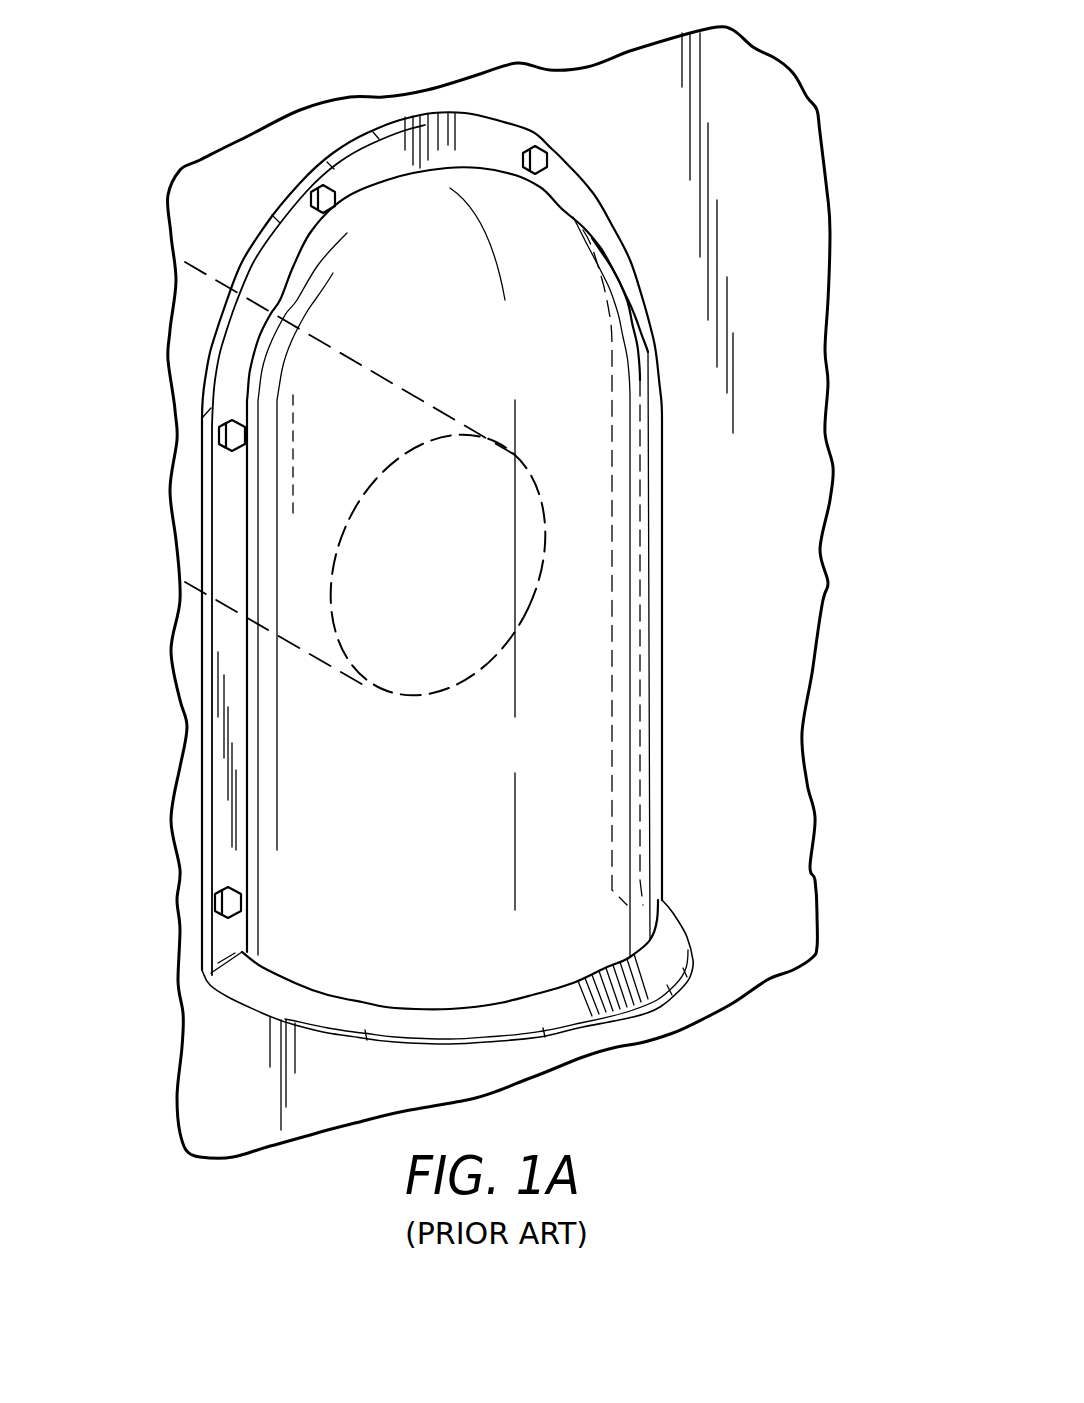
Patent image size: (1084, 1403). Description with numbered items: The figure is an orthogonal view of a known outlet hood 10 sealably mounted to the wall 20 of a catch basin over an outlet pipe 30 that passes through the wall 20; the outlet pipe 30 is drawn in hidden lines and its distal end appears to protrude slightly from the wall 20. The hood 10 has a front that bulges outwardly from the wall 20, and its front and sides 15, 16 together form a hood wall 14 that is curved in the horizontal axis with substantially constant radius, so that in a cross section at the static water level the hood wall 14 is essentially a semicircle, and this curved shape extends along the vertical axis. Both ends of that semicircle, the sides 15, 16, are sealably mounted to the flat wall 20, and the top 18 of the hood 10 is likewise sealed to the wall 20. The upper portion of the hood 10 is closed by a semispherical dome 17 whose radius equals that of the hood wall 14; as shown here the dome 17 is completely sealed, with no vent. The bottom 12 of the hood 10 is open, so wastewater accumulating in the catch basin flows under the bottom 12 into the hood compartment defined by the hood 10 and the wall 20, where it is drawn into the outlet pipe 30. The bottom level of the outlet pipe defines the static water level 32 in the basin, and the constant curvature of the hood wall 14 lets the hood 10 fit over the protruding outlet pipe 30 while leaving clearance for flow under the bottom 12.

The outlet hood 10 is at (498, 549).
The bottom 12 is at (632, 1012).
The hood wall 14 is at (657, 700).
The side 15 is at (247, 617).
The side 16 is at (663, 640).
The dome 17 is at (550, 227).
The top 18 is at (480, 200).
The wall 20 is at (793, 307).
The outlet pipe 30 is at (453, 560).
The static water level 32 is at (437, 697).